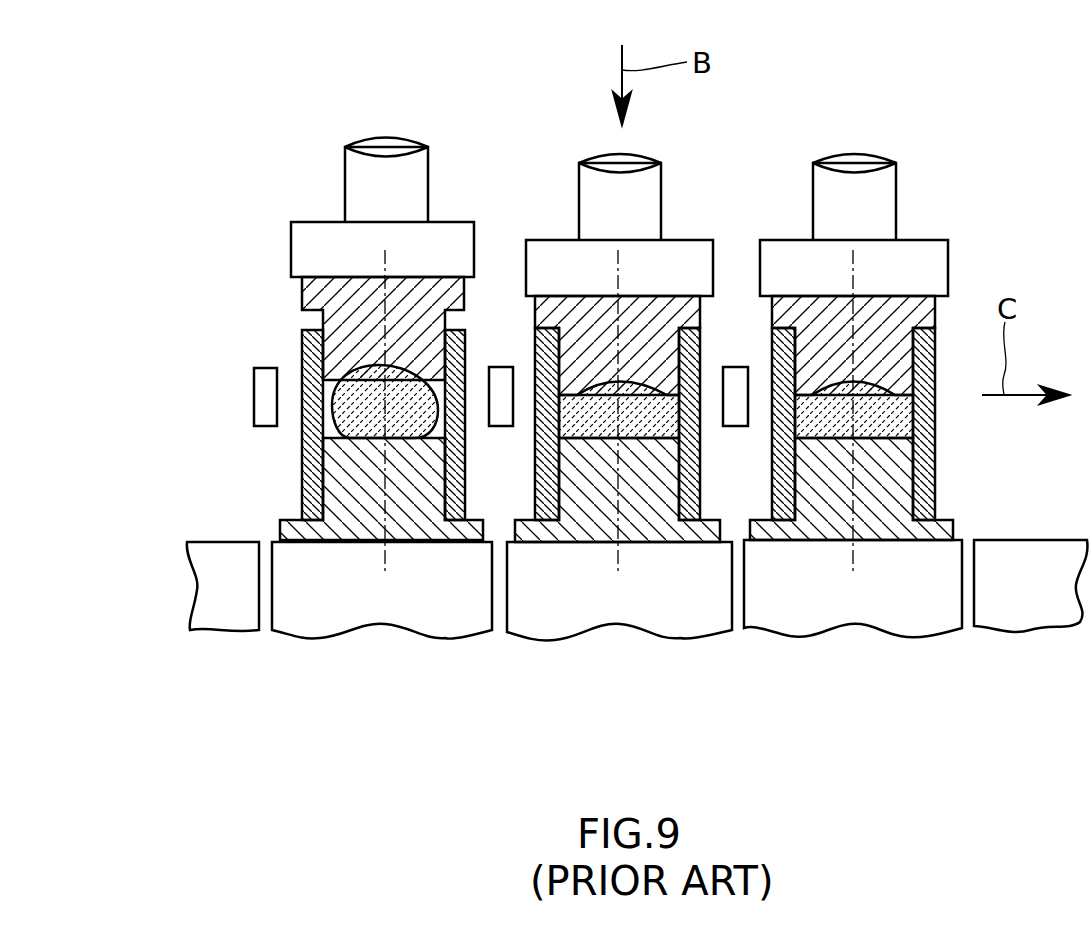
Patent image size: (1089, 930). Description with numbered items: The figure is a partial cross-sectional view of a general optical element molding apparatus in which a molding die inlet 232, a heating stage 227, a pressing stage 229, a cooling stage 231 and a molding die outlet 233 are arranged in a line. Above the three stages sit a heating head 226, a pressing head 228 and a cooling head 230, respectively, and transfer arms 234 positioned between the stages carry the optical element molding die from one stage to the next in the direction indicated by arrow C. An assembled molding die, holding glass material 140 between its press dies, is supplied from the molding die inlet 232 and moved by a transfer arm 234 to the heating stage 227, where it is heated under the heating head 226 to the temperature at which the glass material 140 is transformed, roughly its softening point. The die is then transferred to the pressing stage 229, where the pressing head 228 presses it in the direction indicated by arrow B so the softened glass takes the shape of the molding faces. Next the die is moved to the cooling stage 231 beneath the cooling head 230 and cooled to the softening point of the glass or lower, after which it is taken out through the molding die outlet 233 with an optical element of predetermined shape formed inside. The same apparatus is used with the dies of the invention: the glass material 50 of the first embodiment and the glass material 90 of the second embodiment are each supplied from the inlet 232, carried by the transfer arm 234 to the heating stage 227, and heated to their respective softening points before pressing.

The glass material 50 is at (272, 304).
The glass material 90 is at (272, 321).
The glass material 140 is at (335, 385).
The heating head 226 is at (363, 195).
The heating stage 227 is at (357, 605).
The pressing head 228 is at (593, 207).
The pressing stage 229 is at (562, 595).
The cooling head 230 is at (868, 197).
The cooling stage 231 is at (812, 585).
The molding die inlet 232 is at (235, 615).
The molding die outlet 233 is at (1006, 585).
The transfer arms 234 is at (263, 397).